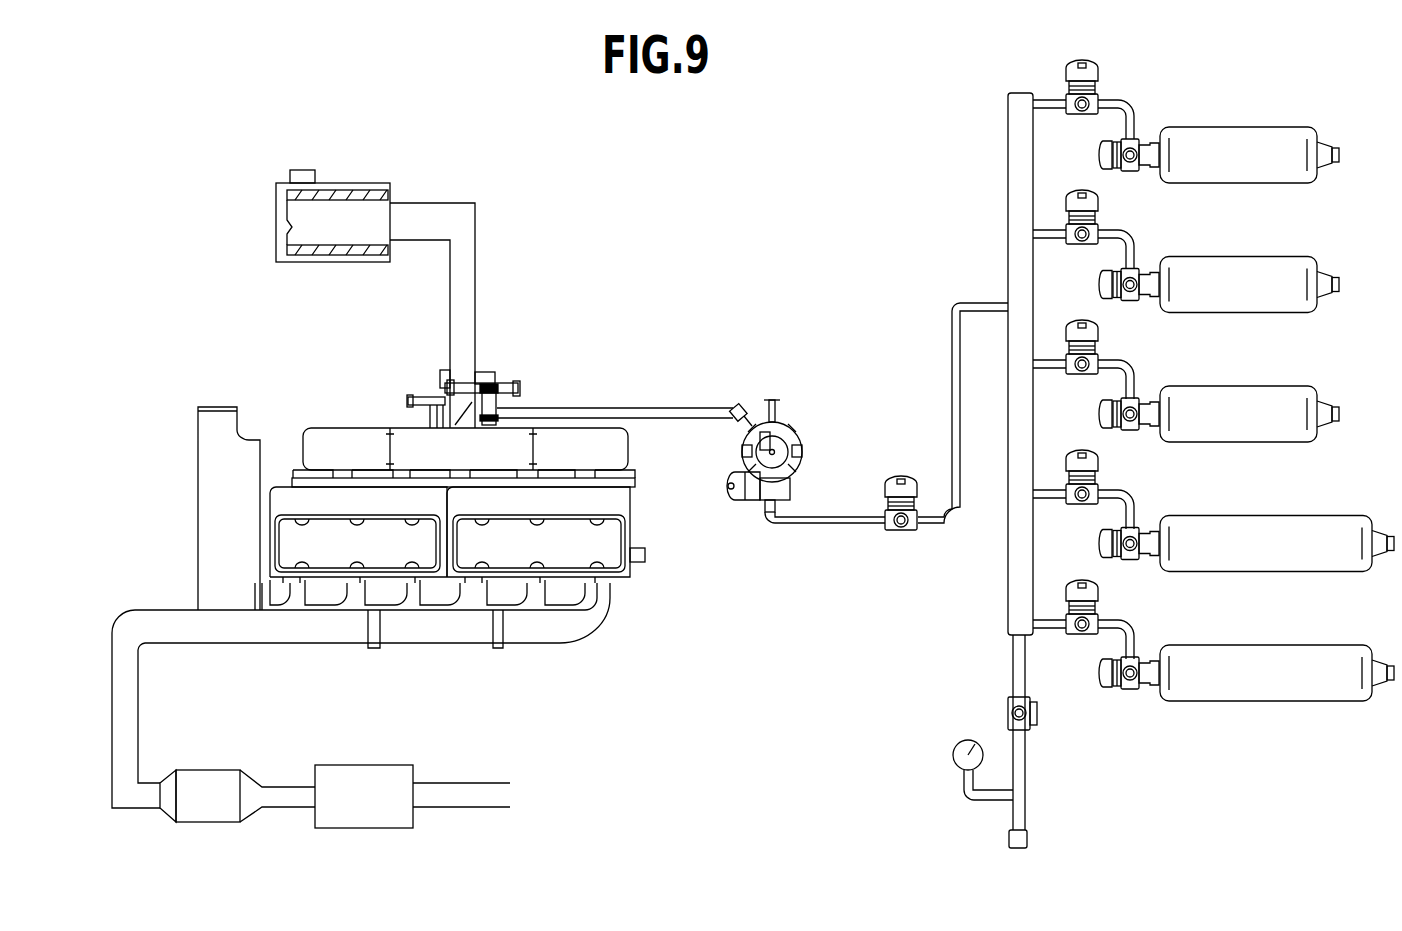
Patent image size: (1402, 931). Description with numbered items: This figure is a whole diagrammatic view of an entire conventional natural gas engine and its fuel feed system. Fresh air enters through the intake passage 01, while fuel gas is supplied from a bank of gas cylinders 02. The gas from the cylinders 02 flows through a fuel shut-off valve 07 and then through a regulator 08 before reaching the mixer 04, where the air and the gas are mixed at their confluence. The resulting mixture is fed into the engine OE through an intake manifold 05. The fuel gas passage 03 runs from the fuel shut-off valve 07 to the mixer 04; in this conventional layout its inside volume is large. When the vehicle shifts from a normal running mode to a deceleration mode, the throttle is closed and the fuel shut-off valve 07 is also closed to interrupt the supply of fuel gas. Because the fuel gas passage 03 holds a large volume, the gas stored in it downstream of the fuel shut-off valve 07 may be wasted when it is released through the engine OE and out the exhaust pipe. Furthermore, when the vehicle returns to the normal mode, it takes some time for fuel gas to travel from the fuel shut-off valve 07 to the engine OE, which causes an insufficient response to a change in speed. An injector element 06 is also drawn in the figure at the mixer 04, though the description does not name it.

The intake passage 01 is at (470, 275).
The gas cylinders 02 is at (1263, 124).
The fuel gas passage 03 is at (677, 408).
The mixer 04 is at (513, 372).
The intake manifold 05 is at (610, 456).
The fuel injector 06 is at (512, 420).
The fuel shut-off valve 07 is at (890, 532).
The regulator 08 is at (790, 478).
The engine OE is at (643, 582).